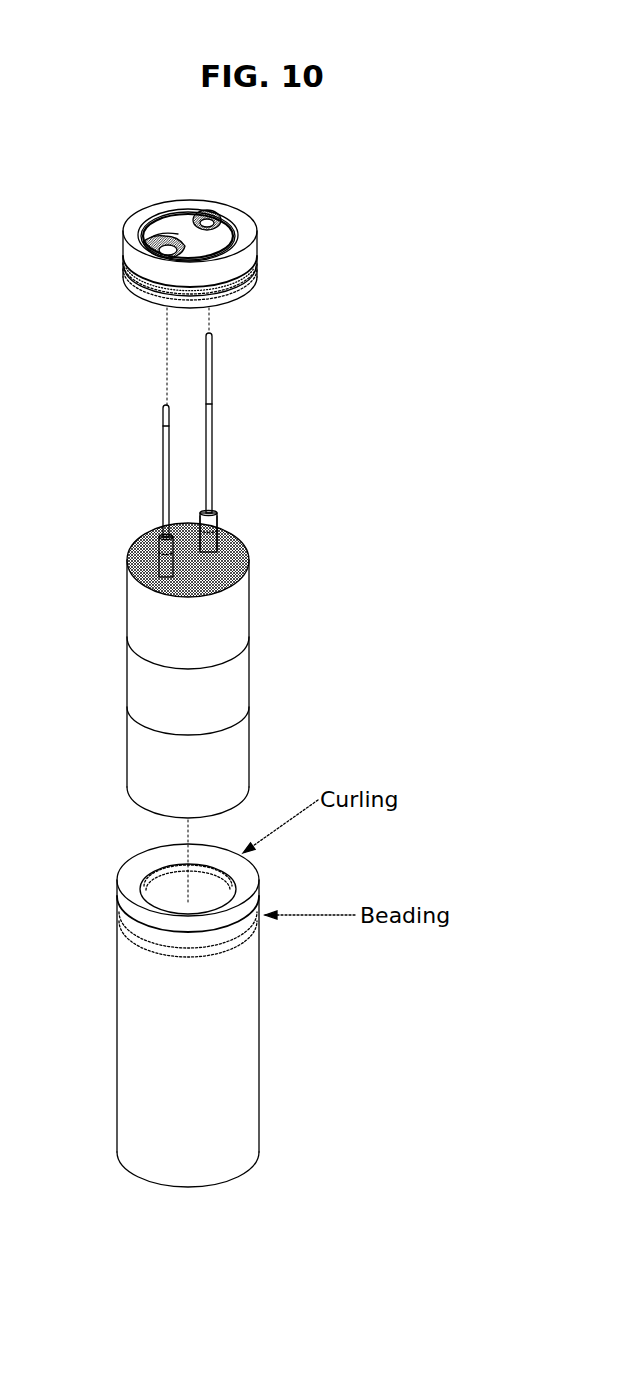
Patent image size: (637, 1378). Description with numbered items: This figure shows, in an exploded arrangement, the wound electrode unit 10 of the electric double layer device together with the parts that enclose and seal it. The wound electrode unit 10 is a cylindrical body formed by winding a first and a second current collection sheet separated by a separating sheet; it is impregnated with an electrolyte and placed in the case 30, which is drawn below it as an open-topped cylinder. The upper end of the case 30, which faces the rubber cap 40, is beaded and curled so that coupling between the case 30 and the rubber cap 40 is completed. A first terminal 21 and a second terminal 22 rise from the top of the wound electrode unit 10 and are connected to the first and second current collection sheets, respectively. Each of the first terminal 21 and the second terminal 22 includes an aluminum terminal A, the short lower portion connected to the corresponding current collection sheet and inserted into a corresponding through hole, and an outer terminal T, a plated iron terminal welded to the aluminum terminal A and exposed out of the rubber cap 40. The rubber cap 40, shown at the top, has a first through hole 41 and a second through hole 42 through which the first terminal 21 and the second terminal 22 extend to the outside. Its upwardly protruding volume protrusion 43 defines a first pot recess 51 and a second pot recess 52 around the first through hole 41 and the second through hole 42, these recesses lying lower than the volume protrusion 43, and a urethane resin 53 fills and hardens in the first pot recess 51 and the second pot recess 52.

The wound electrode unit 10 is at (255, 643).
The first terminal 21 is at (222, 458).
The second terminal 22 is at (157, 485).
The outer terminal T is at (163, 430).
The aluminum terminal A is at (217, 533).
The case 30 is at (245, 1055).
The rubber cap 40 is at (262, 247).
The first through hole 41 is at (217, 214).
The second through hole 42 is at (160, 239).
The volume protrusion 43 is at (257, 280).
The first pot recess 51 is at (219, 228).
The second pot recess 52 is at (122, 268).
The urethane resin 53 is at (162, 233).